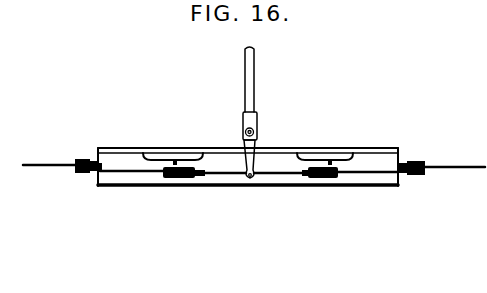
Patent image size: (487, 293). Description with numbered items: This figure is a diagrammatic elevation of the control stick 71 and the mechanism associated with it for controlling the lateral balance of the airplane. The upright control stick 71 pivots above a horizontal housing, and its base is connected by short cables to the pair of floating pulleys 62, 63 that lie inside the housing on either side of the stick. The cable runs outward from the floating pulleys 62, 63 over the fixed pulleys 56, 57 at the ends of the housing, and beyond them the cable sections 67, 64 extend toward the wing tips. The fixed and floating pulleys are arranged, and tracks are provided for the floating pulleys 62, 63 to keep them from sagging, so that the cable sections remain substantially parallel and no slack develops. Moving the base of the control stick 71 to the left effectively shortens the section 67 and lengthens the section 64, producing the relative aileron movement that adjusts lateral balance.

The control stick 71 is at (254, 82).
The section of the cable 67 is at (45, 165).
The section of the cable 64 is at (450, 166).
The fixed pulley 56 is at (70, 174).
The fixed pulley 57 is at (425, 174).
The floating pulley 63 is at (161, 172).
The floating pulley 62 is at (338, 178).